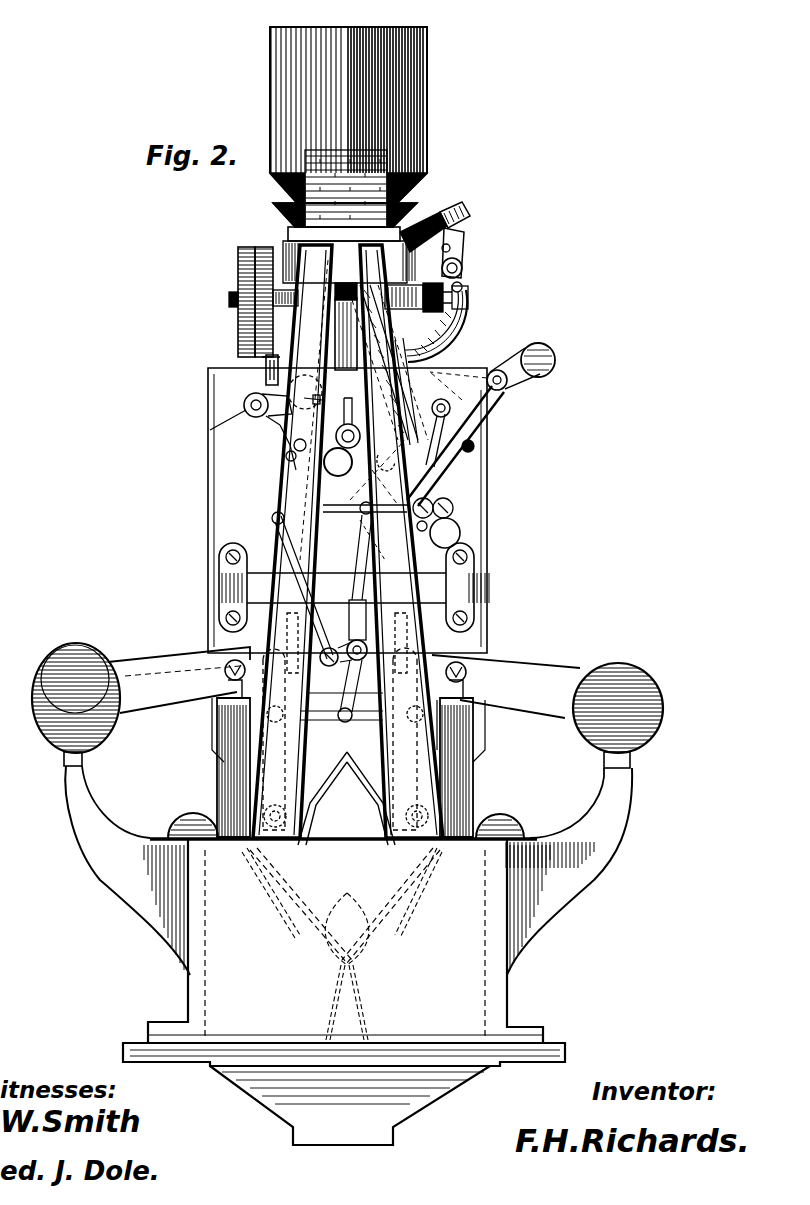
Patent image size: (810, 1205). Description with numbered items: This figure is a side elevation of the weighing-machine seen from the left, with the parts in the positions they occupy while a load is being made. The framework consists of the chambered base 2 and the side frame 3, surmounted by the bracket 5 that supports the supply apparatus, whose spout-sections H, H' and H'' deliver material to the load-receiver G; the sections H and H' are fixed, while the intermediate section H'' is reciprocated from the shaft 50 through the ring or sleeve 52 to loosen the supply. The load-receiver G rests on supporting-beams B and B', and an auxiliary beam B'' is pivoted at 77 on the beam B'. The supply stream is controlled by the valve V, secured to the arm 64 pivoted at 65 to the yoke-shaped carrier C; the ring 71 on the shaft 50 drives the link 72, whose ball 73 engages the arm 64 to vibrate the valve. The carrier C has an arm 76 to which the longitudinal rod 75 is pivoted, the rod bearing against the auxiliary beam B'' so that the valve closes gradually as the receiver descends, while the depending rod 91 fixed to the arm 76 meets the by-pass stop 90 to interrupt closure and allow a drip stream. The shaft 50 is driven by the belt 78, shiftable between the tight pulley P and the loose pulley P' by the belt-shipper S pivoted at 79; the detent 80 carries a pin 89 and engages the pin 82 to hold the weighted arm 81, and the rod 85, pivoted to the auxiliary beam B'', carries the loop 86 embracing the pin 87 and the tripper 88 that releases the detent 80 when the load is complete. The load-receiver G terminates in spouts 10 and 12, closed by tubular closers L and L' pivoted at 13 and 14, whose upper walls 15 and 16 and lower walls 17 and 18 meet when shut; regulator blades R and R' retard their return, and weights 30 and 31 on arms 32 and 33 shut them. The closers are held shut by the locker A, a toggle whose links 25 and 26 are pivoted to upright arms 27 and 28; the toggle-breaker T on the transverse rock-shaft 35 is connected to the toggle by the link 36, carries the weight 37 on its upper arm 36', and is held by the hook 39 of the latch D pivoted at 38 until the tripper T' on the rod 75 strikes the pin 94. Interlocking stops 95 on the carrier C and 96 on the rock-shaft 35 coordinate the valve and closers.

The spout-section H is at (360, 115).
The bracket 5 is at (340, 170).
The spout-section H'' is at (327, 202).
The spout-section H' is at (334, 250).
The belt 78 is at (245, 248).
The tight pulley P is at (235, 302).
The loose pulley P' is at (219, 327).
The arm 64 is at (468, 296).
The arm 76 is at (420, 232).
The pivot 65 is at (462, 215).
The carrier C is at (454, 252).
The ball 73 is at (461, 266).
The link 72 is at (462, 286).
The valve V is at (447, 320).
The ring 71 is at (455, 312).
The interlocking stop 95 is at (436, 352).
The crank-shaft 50 is at (390, 362).
The spout 10 is at (300, 805).
The spout 12 is at (385, 803).
The ring or sleeve 52 is at (332, 326).
The by-pass stop 90 is at (349, 420).
The depending rod 91 is at (414, 391).
The loop 86 is at (284, 378).
The belt-shipper S is at (244, 405).
The pivot 79 is at (214, 427).
The weighted arm 81 is at (305, 392).
The pin 82 is at (322, 399).
The pin 87 is at (270, 420).
The tripper 88 is at (283, 436).
The detent 80 is at (292, 450).
The pin 89 is at (301, 452).
The hook 39 is at (388, 460).
The load-receiver G is at (482, 500).
The pivot 77 is at (240, 660).
The weight 37 is at (548, 360).
The upper arm 36' is at (520, 354).
The transverse rock-shaft 35 is at (507, 386).
The toggle-breaker T is at (455, 439).
The interlocking stop 96 is at (478, 456).
The pivot 38 is at (461, 530).
The latch D is at (375, 498).
The tripper T' is at (371, 493).
The pin 94 is at (370, 538).
The longitudinal rod 75 is at (360, 575).
The rod 85 is at (312, 625).
The link 36 is at (343, 669).
The locker A is at (345, 700).
The link 26 is at (352, 722).
The link 25 is at (340, 722).
The upright arm 27 is at (322, 797).
The upright arm 28 is at (371, 798).
The pivot 13 is at (275, 805).
The pivot 14 is at (415, 830).
The auxiliary beam B'' is at (179, 675).
The supporting-beam B is at (111, 809).
The supporting-beam B' is at (547, 815).
The side frame 3 is at (460, 660).
The weight 30 is at (175, 820).
The weight 31 is at (522, 822).
The chambered base 2 is at (344, 991).
The arm 32 is at (235, 852).
The arm 33 is at (455, 852).
The tubular closer L is at (301, 905).
The tubular closer L' is at (391, 905).
The upper wall 15 is at (322, 865).
The upper wall 16 is at (406, 893).
The lower wall 17 is at (323, 929).
The lower wall 18 is at (373, 929).
The closer-retarding mechanism R is at (323, 1002).
The closer-retarding mechanism R' is at (370, 1002).